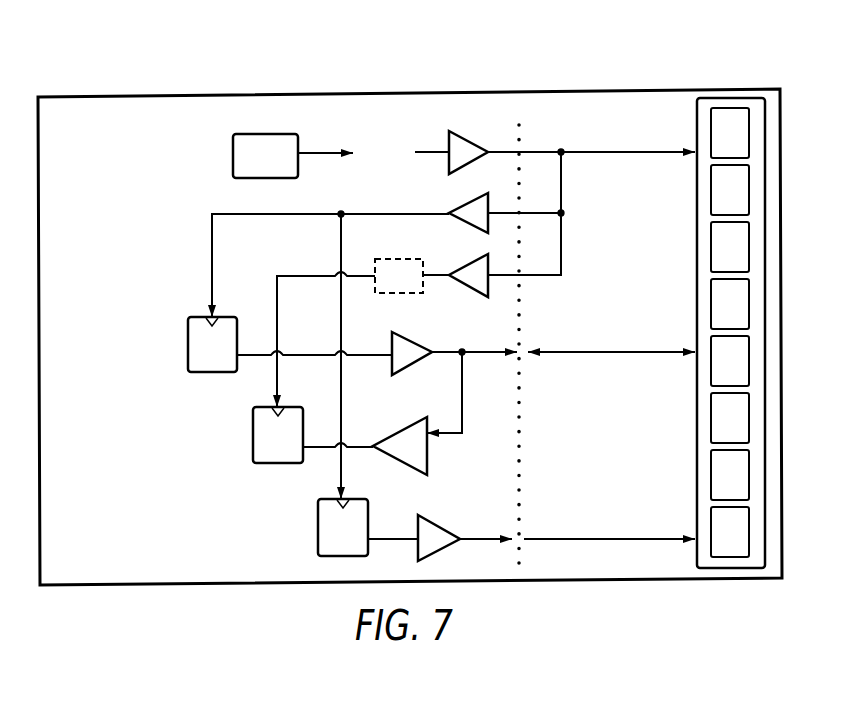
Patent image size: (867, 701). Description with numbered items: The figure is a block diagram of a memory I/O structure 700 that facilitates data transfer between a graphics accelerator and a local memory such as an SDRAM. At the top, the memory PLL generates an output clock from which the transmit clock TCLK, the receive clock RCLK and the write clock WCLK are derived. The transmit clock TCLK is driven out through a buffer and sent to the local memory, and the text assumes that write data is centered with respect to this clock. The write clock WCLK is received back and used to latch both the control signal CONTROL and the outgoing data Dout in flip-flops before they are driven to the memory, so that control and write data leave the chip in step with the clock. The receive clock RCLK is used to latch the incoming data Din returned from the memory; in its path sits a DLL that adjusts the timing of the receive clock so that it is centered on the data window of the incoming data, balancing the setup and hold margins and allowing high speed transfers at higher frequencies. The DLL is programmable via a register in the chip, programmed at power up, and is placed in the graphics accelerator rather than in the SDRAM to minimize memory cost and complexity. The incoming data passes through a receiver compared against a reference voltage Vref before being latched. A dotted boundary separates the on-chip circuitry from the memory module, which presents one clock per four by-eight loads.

The memory system with clocked data path and module loads 700 is at (410, 294).
The memory PLL is at (265, 156).
The element DLL is at (399, 276).
The tCLK TCLK is at (496, 152).
The wCLK WCLK is at (350, 343).
The rCLK RCLK is at (377, 327).
The outgoing data Dout is at (188, 356).
The incoming data Din is at (253, 448).
The reference-voltage data receiver Vref is at (427, 455).
The control signal CONTROL is at (318, 539).